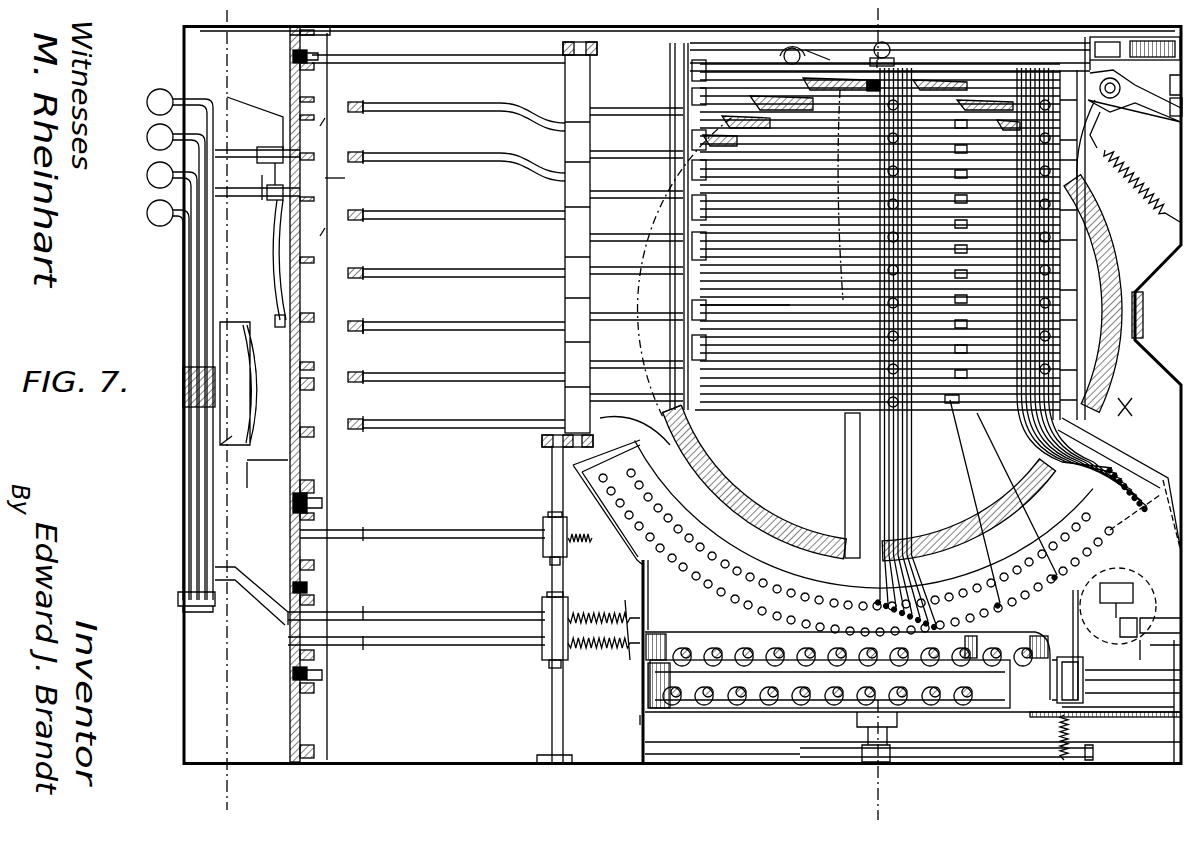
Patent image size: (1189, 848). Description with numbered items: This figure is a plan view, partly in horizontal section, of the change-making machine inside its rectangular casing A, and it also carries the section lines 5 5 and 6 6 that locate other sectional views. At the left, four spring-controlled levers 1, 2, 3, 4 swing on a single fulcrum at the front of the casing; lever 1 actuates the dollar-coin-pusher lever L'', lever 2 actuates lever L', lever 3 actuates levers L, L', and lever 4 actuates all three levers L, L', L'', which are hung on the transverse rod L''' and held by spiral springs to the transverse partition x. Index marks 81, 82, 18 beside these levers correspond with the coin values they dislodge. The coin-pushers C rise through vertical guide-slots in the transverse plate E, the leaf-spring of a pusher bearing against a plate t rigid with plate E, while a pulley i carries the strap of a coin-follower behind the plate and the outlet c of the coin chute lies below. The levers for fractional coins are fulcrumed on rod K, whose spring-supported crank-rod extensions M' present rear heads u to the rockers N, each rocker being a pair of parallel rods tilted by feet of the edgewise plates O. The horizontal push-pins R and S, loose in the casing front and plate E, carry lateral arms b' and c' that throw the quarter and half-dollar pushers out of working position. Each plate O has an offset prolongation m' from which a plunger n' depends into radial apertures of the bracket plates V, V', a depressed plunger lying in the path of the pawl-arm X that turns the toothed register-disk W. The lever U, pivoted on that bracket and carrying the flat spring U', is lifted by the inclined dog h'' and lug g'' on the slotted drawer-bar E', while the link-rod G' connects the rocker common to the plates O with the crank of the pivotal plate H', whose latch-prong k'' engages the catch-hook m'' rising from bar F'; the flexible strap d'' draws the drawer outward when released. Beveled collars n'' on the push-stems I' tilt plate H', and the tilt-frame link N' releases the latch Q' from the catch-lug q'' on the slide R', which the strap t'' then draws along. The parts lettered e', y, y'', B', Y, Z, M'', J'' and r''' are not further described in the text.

The spring-controlled lever 1 is at (168, 400).
The spring-controlled lever 2 is at (172, 381).
The spring-controlled lever 3 is at (125, 576).
The spring-controlled lever 4 is at (148, 30).
The section line 5 is at (867, 812).
The section line 6 is at (237, 797).
The plate t is at (276, 359).
The coin-pusher C is at (293, 690).
The pulley i is at (322, 678).
The push-pin R is at (245, 90).
The arm e' is at (338, 184).
The lateral arm c' is at (337, 179).
The push-pin S is at (258, 200).
The lateral arm b' is at (263, 260).
The lug y is at (261, 309).
The central bottom outlet c is at (240, 383).
The transverse plate E is at (257, 470).
The crank-rod extension M' is at (438, 242).
The coin-value index 81 is at (365, 526).
The coin-value index 82 is at (365, 601).
The coin-value index 18 is at (365, 654).
The rod K is at (552, 455).
The connecting bars M'' is at (648, 230).
The slotted bar E' is at (654, 220).
The rocker N is at (835, 264).
The link y'' is at (714, 295).
The top rail B' is at (890, 50).
The flexible strap t'' is at (892, 50).
The lug g'' is at (1104, 53).
The pivoted lever Y is at (1129, 125).
The dog h'' is at (1164, 107).
The spring Z is at (1142, 186).
The flat spring U' is at (891, 348).
The lever U is at (828, 274).
The rear head u is at (960, 420).
The plate O is at (1090, 372).
The plunger n' is at (927, 332).
The pawl-arm X is at (1125, 407).
The register-disk W is at (721, 481).
The plate prolongation m' is at (930, 505).
The link N' is at (1122, 406).
The flexible strap d'' is at (864, 506).
The bracket plate V' is at (843, 601).
The bracket plate V is at (1145, 529).
The dollar-coin-pusher lever L is at (422, 518).
The dollar-coin-pusher lever L' is at (416, 600).
The dollar-coin-pusher lever L'' is at (416, 655).
The transverse rod L''' is at (550, 605).
The pivotal horizontal plate H' is at (604, 640).
The transverse partition x is at (632, 724).
The casing A is at (645, 763).
The bar F' is at (847, 689).
The push-stem I' is at (852, 667).
The bevel collar n'' is at (829, 703).
The latch-prong k'' is at (863, 652).
The catch-hook m'' is at (946, 771).
The block J'' is at (1052, 680).
The slide R' is at (1065, 675).
The link-rod G' is at (1093, 606).
The box r''' is at (1116, 600).
The latch Q' is at (1105, 679).
The catch-lug q'' is at (1153, 665).